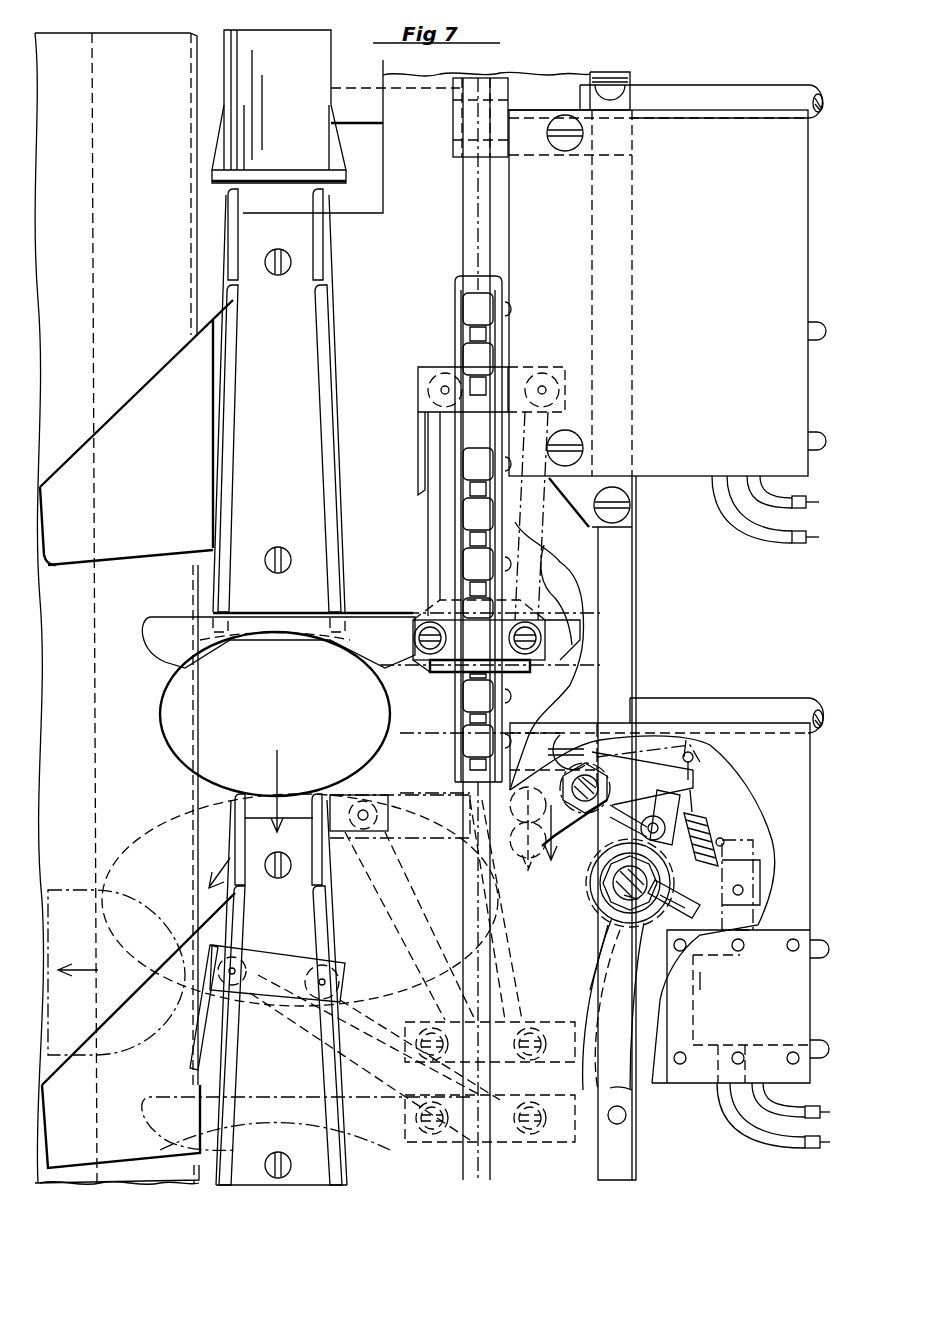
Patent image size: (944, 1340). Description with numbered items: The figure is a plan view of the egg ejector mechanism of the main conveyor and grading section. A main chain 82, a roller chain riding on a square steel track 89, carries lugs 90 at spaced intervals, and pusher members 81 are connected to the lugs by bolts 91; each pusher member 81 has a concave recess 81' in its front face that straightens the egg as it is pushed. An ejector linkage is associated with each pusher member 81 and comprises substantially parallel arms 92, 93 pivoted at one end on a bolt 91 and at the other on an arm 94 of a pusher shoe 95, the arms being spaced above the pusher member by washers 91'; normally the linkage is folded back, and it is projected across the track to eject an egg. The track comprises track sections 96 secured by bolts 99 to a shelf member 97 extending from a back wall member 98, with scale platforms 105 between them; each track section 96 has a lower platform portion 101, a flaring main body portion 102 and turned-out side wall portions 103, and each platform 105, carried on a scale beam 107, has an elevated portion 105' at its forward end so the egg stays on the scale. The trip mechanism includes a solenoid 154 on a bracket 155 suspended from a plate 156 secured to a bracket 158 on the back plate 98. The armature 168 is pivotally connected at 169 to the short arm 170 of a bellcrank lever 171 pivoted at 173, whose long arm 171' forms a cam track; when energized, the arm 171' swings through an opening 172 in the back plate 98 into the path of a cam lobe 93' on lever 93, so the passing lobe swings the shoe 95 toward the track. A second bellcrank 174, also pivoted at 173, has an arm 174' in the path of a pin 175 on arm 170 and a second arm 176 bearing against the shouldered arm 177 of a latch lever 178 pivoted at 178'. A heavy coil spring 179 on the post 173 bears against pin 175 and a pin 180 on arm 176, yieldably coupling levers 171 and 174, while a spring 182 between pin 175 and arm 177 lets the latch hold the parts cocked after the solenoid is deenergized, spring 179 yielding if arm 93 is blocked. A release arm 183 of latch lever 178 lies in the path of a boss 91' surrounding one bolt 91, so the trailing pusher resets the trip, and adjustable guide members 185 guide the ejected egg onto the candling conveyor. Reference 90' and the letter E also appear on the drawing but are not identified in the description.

The pusher member 81 is at (321, 865).
The recess 81' is at (275, 656).
The main chain 82 is at (472, 232).
The track 89 is at (463, 200).
The lugs 90 is at (491, 679).
The clamp plate 90' is at (418, 680).
The bolts 91 is at (445, 630).
The boss 91' is at (490, 882).
The arm 92 is at (428, 532).
The arm 93 is at (547, 601).
The cam lobe 93' is at (549, 820).
The arm 94 is at (437, 367).
The pusher shoe 95 is at (418, 434).
The track section 96 is at (330, 305).
The shelf member 97 is at (383, 198).
The back wall member 98 is at (636, 1152).
The bolts 99 is at (278, 276).
The lower platform portion 101 is at (330, 249).
The main body portion 102 is at (318, 596).
The turned-out side wall portions 103 is at (332, 474).
The scale platform 105 is at (275, 413).
The elevated portion 105' is at (279, 458).
The scale beam 107 is at (685, 85).
The solenoid 154 is at (700, 967).
The bracket 155 is at (800, 1083).
The plate 156 is at (685, 478).
The bracket 158 is at (579, 511).
The solenoid armature 168 is at (742, 915).
The pivotal connection 169 is at (743, 889).
The short arm 170 is at (758, 872).
The bellcrank lever 171 is at (593, 1004).
The lever arm 171' is at (581, 1010).
The opening 172 is at (640, 1092).
The pivot post 173 is at (628, 890).
The second bellcrank 174 is at (670, 912).
The arm 174' is at (689, 912).
The pin 175 is at (738, 1006).
The second arm 176 is at (700, 800).
The shouldered arm 177 is at (692, 760).
The latch lever 178 is at (576, 813).
The pivot 178' is at (646, 773).
The coil spring 179 is at (605, 884).
The pin 180 is at (712, 822).
The spring 182 is at (726, 838).
The release arm 183 is at (558, 844).
The guide members 185 is at (143, 382).
The envelope path E is at (150, 804).